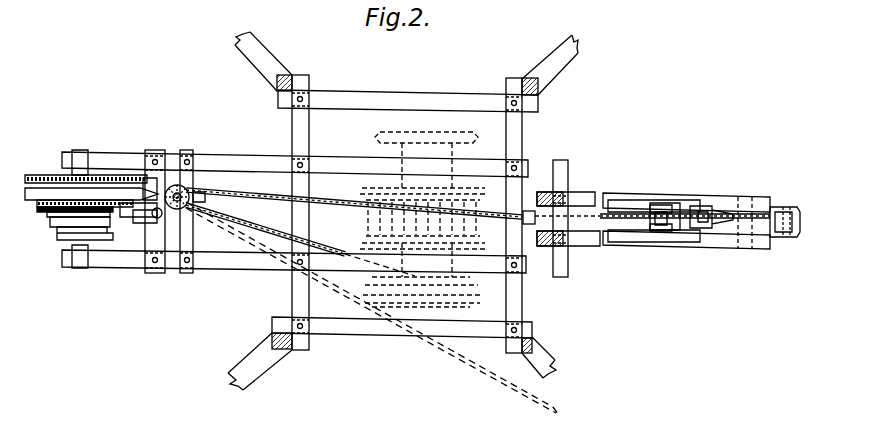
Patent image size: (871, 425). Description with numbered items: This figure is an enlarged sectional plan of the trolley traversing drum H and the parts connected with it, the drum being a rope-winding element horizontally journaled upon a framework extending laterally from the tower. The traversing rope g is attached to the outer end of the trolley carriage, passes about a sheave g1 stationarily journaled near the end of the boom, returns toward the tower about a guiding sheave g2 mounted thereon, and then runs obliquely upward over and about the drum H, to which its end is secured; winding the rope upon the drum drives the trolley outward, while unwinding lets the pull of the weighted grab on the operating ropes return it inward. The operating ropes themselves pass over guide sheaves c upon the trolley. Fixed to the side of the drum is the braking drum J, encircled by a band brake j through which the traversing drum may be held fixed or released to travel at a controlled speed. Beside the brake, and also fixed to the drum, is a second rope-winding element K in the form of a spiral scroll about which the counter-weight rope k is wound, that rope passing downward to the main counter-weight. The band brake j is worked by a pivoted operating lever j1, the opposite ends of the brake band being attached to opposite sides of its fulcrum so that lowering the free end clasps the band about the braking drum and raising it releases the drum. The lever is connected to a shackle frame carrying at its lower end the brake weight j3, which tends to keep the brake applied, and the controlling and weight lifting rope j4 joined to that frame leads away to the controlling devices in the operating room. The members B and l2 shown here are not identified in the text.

The trolley traversing drum H is at (42, 174).
The traversing rope g is at (55, 176).
The band brake j is at (30, 192).
The braking drum J is at (40, 209).
The counter-weight rope k is at (52, 220).
The second rope-winding element K is at (58, 232).
The pivoted operating lever j1 is at (165, 189).
The brake weight j3 is at (195, 190).
The lower cord l2 is at (262, 240).
The controlling and weight lifting rope j4 is at (558, 410).
The guiding sheave g2 is at (546, 200).
The guide rails B is at (650, 244).
The guide sheaves c is at (692, 202).
The sheave g1 is at (760, 212).